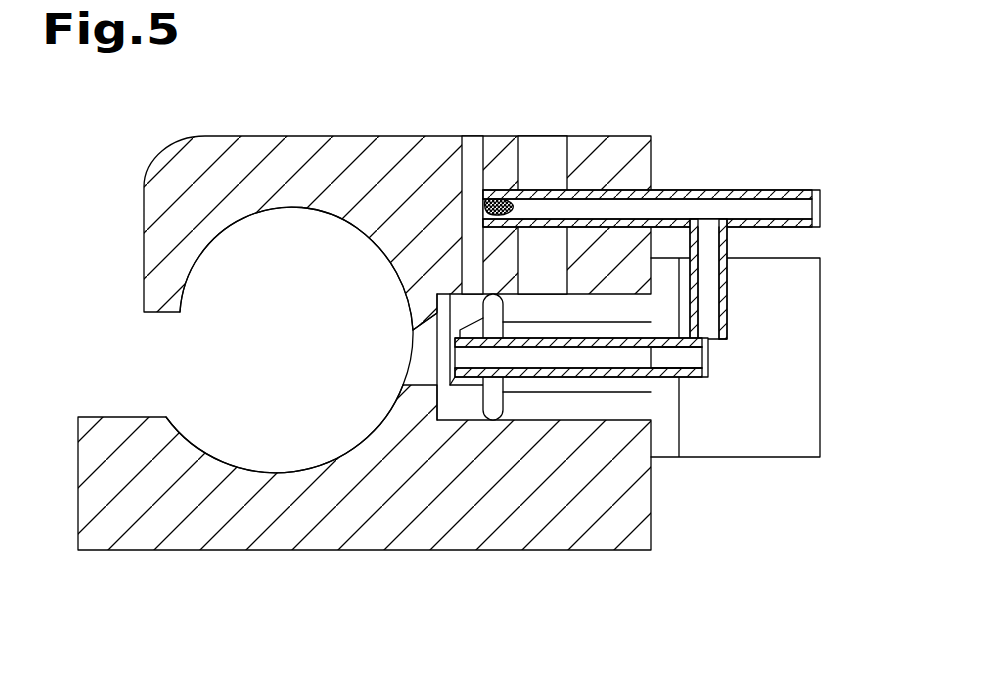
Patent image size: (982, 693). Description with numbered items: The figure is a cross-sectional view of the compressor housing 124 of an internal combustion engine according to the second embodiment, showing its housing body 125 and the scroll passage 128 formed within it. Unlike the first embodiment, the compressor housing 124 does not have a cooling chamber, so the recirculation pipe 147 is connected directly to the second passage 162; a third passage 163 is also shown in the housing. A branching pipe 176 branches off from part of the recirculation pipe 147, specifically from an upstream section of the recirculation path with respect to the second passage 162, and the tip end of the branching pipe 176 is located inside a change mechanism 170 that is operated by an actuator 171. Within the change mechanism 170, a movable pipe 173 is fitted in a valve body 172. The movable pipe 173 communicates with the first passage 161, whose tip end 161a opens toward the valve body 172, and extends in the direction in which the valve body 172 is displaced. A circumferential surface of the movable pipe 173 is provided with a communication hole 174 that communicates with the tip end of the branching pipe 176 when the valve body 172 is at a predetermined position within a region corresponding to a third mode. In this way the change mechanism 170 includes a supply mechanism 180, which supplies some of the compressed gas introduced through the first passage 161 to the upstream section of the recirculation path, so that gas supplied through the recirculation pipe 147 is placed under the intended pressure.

The compressor housing 124 is at (328, 362).
The housing body 125 is at (78, 505).
The scroll passage 128 is at (247, 312).
The recirculation pipe 147 is at (770, 190).
The first passage 161 is at (405, 380).
The tip end 161a is at (455, 422).
The second passage 162 is at (478, 150).
The third passage 163 is at (566, 150).
The change mechanism 170 is at (655, 372).
The actuator 171 is at (747, 458).
The valve body 172 is at (584, 417).
The movable pipe 173 is at (567, 376).
The communication hole 174 is at (665, 348).
The branching pipe 176 is at (728, 290).
The supply mechanism 180 is at (764, 362).